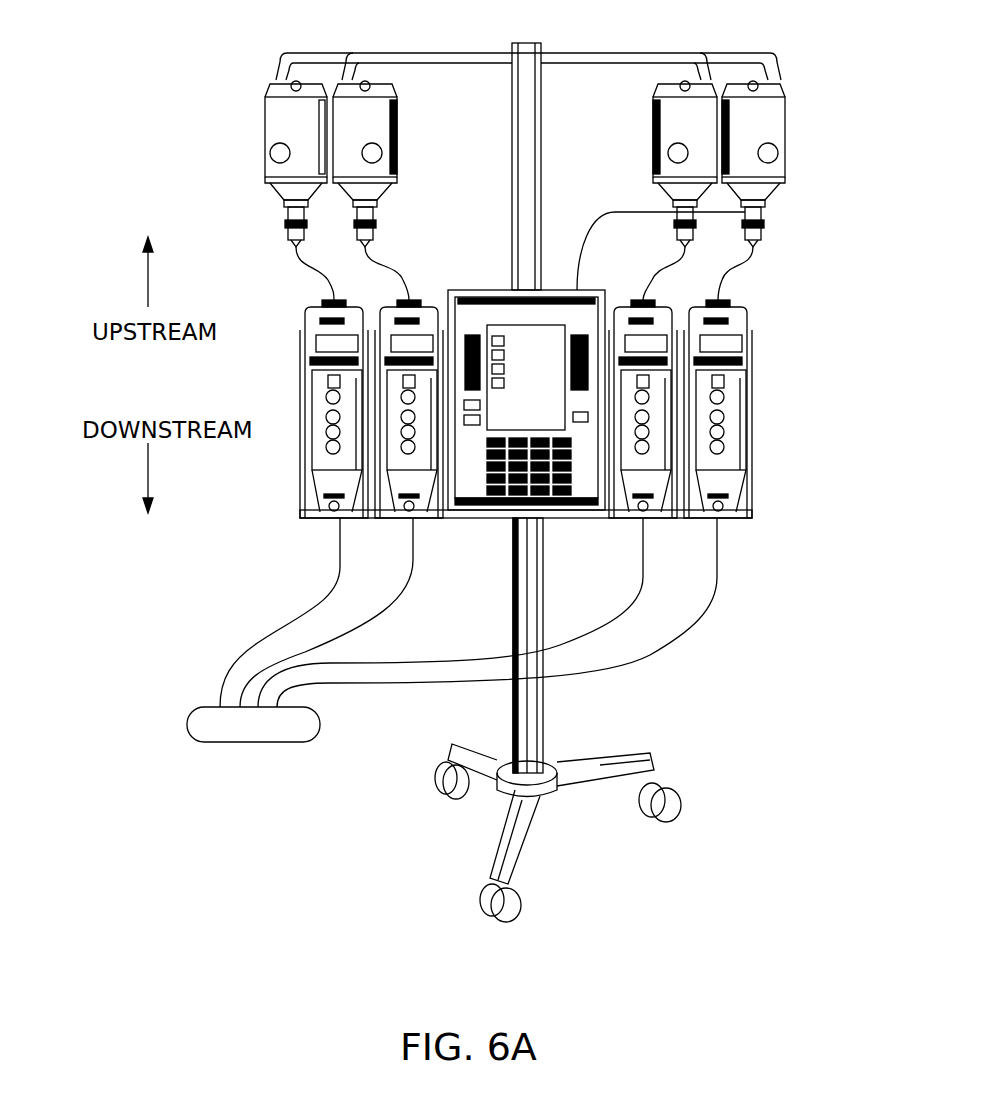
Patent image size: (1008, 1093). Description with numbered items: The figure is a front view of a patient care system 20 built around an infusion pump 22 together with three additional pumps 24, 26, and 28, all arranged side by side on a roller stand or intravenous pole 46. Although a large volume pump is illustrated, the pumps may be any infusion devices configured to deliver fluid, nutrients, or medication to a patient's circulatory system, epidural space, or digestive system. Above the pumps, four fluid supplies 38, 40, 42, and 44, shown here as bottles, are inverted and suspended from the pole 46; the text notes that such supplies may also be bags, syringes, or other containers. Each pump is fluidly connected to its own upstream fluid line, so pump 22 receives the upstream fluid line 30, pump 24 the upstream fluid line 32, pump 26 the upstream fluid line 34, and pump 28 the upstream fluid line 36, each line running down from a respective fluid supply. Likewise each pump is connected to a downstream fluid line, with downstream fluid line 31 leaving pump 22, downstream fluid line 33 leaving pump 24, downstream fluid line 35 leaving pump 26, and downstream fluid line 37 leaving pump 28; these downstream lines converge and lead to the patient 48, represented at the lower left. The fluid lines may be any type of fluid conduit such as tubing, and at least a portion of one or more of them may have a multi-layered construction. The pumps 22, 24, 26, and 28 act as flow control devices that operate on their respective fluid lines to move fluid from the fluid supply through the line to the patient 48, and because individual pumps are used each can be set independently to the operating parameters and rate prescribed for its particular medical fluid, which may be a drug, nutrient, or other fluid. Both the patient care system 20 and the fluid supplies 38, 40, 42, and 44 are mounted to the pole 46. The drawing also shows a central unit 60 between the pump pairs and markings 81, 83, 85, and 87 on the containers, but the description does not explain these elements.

The patient care system 20 is at (108, 84).
The pump 22 is at (745, 302).
The pump 24 is at (627, 302).
The pump 26 is at (392, 300).
The pump 28 is at (315, 302).
The upstream fluid line 30 is at (755, 255).
The downstream fluid line 31 is at (715, 590).
The upstream fluid line 32 is at (687, 255).
The downstream fluid line 33 is at (632, 590).
The upstream fluid line 34 is at (395, 268).
The downstream fluid line 35 is at (400, 602).
The upstream fluid line 36 is at (300, 252).
The downstream fluid line 37 is at (322, 592).
The fluid supply 38 is at (786, 164).
The fluid supply 40 is at (644, 164).
The fluid supply 42 is at (399, 164).
The fluid supply 44 is at (255, 164).
The intravenous (IV) pole 46 is at (544, 725).
The patient 48 is at (187, 722).
The control unit 60 is at (500, 290).
The container identifier 81 is at (778, 153).
The container identifier 83 is at (668, 153).
The container identifier 85 is at (397, 150).
The container identifier 87 is at (270, 153).